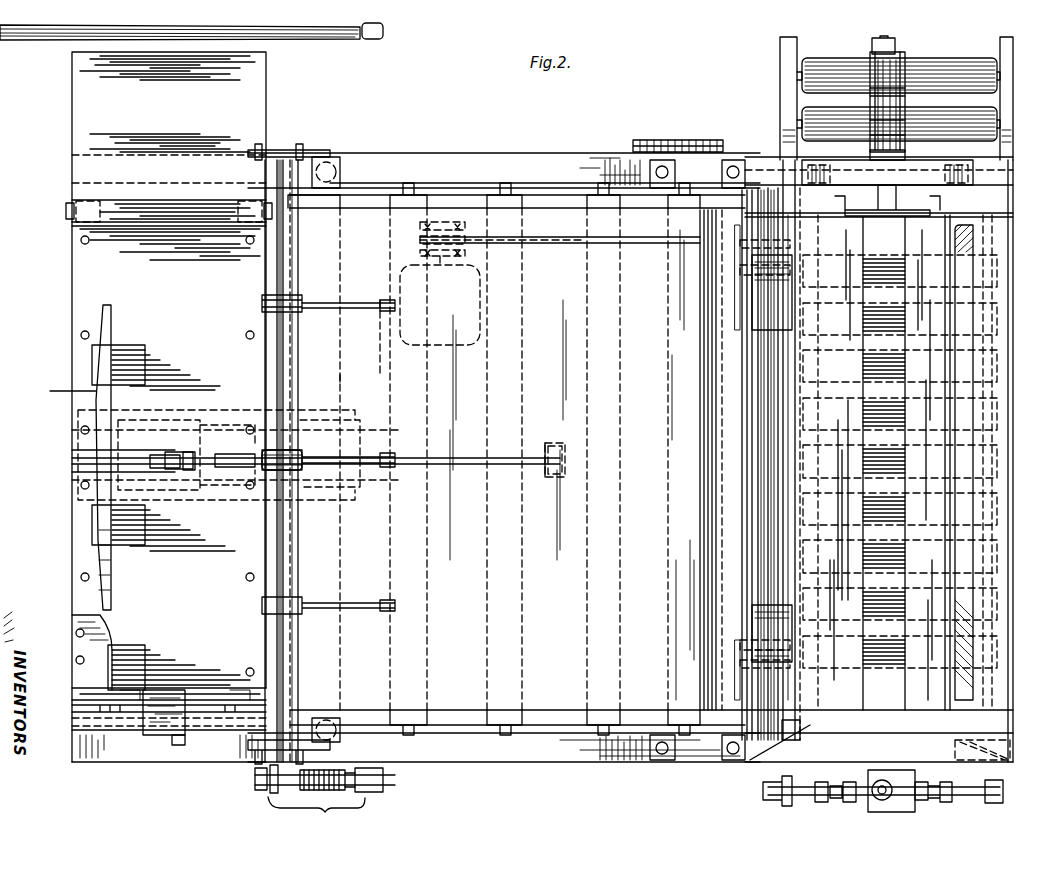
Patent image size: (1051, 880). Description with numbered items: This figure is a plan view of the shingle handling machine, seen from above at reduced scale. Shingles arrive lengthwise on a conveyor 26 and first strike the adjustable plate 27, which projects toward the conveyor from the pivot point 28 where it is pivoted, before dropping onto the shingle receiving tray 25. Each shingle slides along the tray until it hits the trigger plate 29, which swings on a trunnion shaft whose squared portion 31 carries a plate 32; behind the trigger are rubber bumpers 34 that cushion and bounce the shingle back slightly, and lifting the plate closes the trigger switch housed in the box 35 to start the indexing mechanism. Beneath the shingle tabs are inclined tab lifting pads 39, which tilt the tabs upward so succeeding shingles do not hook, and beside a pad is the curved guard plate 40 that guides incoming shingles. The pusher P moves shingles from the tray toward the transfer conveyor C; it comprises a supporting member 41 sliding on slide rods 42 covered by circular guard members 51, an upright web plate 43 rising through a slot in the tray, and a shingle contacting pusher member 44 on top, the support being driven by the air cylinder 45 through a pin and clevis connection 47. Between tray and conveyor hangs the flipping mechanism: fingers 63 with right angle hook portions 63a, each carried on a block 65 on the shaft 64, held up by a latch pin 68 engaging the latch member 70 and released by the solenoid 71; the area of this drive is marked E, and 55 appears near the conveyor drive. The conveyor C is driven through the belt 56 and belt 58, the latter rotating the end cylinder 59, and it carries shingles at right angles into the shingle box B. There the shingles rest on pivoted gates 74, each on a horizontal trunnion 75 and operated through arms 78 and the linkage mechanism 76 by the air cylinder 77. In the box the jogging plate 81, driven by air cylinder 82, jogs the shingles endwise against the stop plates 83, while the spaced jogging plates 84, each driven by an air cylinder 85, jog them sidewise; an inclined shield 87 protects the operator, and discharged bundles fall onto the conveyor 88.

The conveyor 26 is at (30, 40).
The adjustable plate 27 is at (169, 407).
The shingle receiving tray 25 is at (169, 415).
The pivot point 28 is at (66, 210).
The shingle contacting pusher member 44 is at (112, 330).
The inclined tab lifting pad 39 is at (146, 357).
The pusher P is at (62, 392).
The guard plate 40 is at (112, 624).
The slide rods 42 is at (222, 410).
The supporting member 41 is at (316, 451).
The upright web plate 43 is at (143, 455).
The pin and clevis connection 47 is at (185, 470).
The air cylinder 45 is at (490, 445).
The circular guard members 51 is at (311, 413).
The trigger plate 29 is at (205, 688).
The rubber bumpers 34 is at (100, 703).
The plate 32 is at (162, 725).
The box 35 is at (176, 743).
The squared portion 31 is at (138, 702).
The shaft 64 is at (275, 360).
The block 65 is at (300, 298).
The fingers 63 is at (348, 310).
The right angle hook portions 63a is at (378, 300).
The end cylinder 59 is at (668, 366).
The transfer conveyor C is at (643, 510).
The belt 56 is at (580, 245).
The motor 55 is at (462, 275).
The belt 58 is at (688, 140).
The latch member 70 is at (255, 780).
The latch pin 68 is at (298, 794).
The solenoid 71 is at (383, 782).
The drive unit E is at (316, 815).
The shingle box B is at (879, 459).
The pivoted gates 74 is at (832, 421).
The inclined shield 87 is at (965, 423).
The jogging plate 81 is at (866, 190).
The air cylinder 85 is at (737, 272).
The jogging plates 84 is at (794, 280).
The stop plates 83 is at (765, 755).
The conveyor 88 is at (955, 68).
The air cylinder 82 is at (872, 98).
The horizontal trunnion 75 is at (770, 790).
The arm 78 is at (798, 792).
The linkage mechanism 76 is at (836, 800).
The air cylinder 77 is at (890, 800).